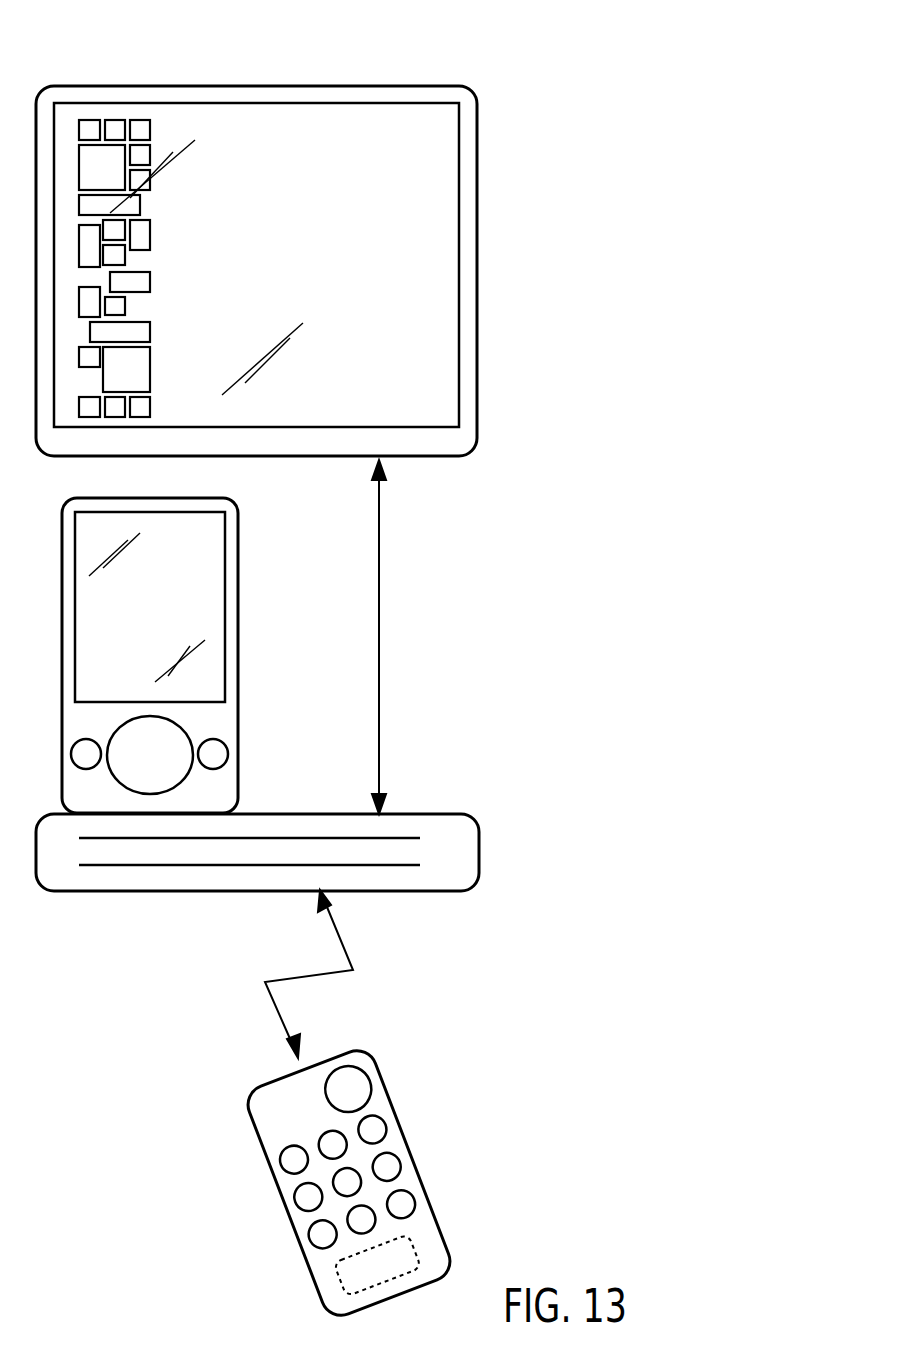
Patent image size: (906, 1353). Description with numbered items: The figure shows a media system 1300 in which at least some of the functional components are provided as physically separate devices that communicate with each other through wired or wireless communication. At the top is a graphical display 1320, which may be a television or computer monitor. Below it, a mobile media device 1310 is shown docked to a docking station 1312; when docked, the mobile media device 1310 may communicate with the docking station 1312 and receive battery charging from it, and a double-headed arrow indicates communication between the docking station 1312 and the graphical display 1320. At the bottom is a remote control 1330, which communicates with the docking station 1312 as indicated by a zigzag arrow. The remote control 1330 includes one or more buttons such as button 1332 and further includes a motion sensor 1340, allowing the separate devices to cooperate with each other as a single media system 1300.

The media system 1300 is at (500, 53).
The graphical display 1320 is at (478, 240).
The mobile media device 1310 is at (238, 620).
The docking station 1312 is at (480, 855).
The remote control 1330 is at (374, 1183).
The button 1332 is at (382, 1168).
The motion sensor 1340 is at (378, 1265).